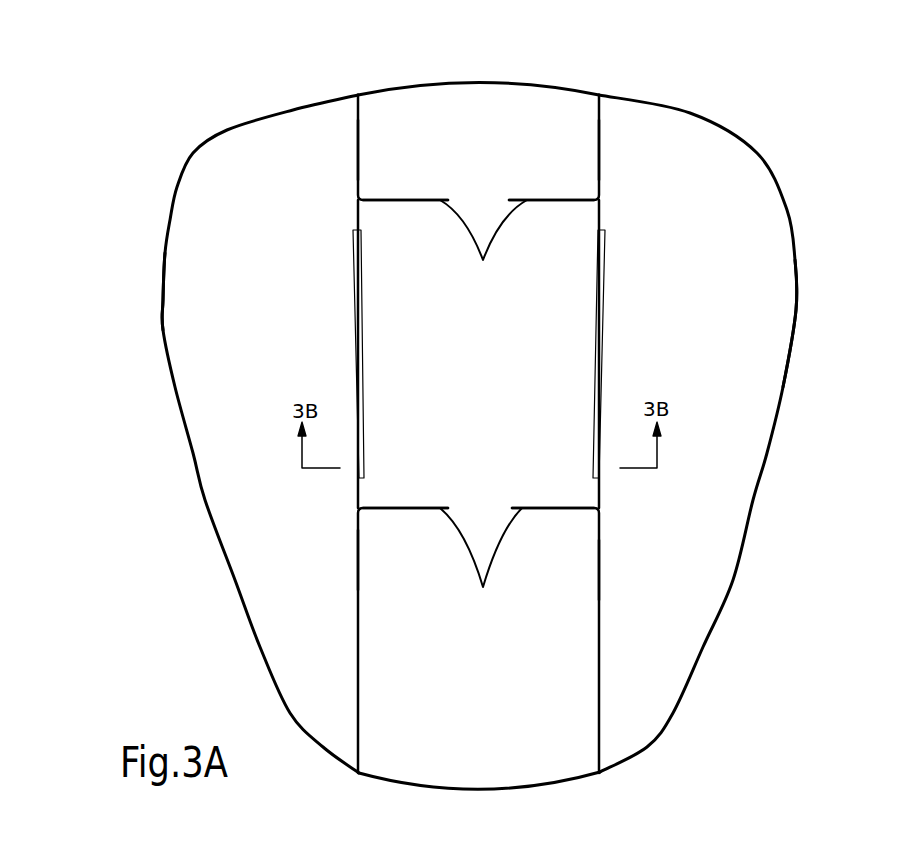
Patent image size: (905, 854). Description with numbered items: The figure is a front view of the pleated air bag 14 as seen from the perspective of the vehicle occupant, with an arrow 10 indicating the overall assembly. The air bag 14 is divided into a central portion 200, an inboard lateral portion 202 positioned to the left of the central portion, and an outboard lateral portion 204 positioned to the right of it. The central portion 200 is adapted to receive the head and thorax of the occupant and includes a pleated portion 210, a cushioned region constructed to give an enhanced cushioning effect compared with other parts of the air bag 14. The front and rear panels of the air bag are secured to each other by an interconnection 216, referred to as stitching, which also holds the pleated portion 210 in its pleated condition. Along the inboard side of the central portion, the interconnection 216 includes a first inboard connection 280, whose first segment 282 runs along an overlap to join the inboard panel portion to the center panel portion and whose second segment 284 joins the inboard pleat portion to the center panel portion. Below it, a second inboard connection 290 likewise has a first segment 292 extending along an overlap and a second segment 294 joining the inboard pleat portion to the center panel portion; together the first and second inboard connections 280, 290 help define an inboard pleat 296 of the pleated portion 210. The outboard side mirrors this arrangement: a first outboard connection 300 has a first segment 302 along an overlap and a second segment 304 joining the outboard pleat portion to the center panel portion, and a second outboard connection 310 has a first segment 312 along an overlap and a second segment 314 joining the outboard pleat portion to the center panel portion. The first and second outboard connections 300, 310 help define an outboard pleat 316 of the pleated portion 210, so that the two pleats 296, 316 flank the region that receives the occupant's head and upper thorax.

The golf club head 10 is at (223, 103).
The air bag 14 is at (183, 133).
The central portion 200 is at (390, 310).
The inboard lateral portion 202 is at (197, 287).
The outboard lateral portion 204 is at (762, 328).
The pleated portion 210 is at (563, 335).
The interconnection 216 is at (483, 410).
The first inboard connection 280 is at (359, 139).
The first segment 282 is at (358, 161).
The second segment 284 is at (387, 203).
The second inboard connection 290 is at (359, 607).
The first segment 292 is at (359, 556).
The second segment 294 is at (405, 512).
The inboard pleat 296 is at (360, 353).
The first outboard connection 300 is at (597, 156).
The first segment 302 is at (600, 139).
The second segment 304 is at (568, 203).
The second outboard connection 310 is at (601, 619).
The first segment 312 is at (601, 568).
The second segment 314 is at (555, 511).
The outboard pleat 316 is at (603, 343).